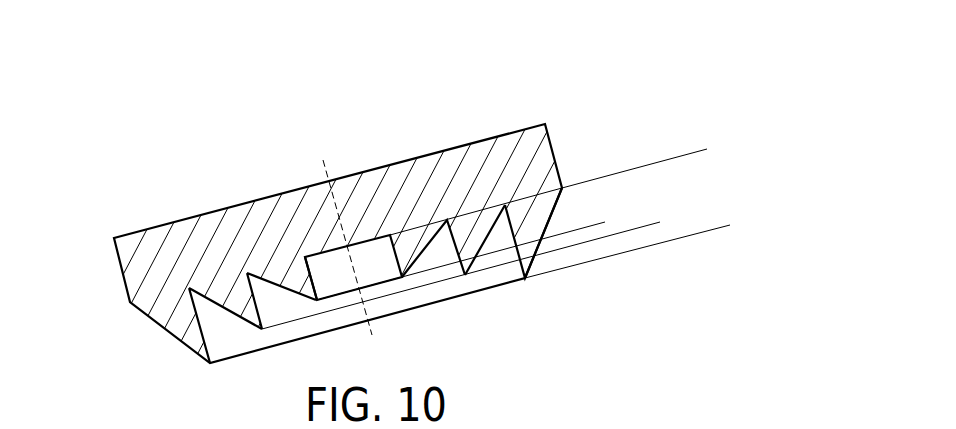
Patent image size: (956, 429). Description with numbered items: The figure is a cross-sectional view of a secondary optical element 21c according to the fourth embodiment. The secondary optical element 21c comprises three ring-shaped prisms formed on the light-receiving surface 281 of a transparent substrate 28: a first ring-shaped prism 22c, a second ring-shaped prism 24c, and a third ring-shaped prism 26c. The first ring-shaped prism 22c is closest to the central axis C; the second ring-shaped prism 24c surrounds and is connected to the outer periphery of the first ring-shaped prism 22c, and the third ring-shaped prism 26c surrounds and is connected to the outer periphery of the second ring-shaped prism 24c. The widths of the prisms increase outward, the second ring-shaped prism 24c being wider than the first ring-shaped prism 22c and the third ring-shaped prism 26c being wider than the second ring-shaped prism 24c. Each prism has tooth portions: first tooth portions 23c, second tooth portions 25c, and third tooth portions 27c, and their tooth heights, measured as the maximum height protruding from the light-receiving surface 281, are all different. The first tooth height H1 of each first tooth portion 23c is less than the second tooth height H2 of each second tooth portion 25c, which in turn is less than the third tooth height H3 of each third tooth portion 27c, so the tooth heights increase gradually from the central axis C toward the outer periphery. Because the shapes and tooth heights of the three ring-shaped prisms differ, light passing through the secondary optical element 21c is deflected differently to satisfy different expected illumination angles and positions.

The secondary optical element 21c is at (110, 152).
The first ring-shaped prism 22c is at (356, 185).
The first tooth portion 23c is at (297, 280).
The second ring-shaped prism 24c is at (345, 181).
The second tooth portion 25c is at (240, 302).
The third ring-shaped prism 26c is at (346, 184).
The third tooth portion 27c is at (183, 317).
The transparent substrate 28 is at (541, 143).
The light-receiving surface 281 is at (367, 241).
The central axis C is at (342, 236).
The first tooth height H1 is at (594, 180).
The second tooth height H2 is at (648, 165).
The third tooth height H3 is at (707, 149).